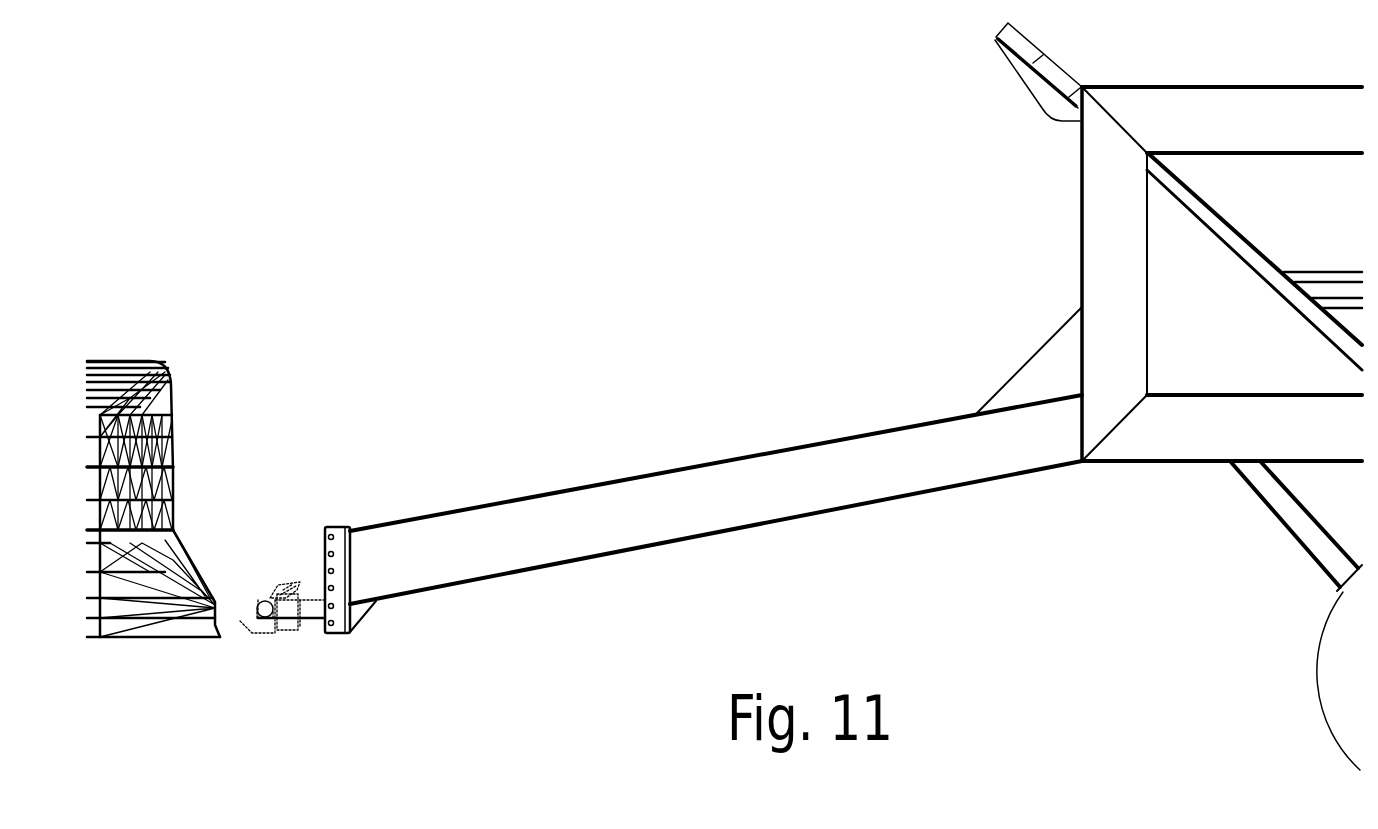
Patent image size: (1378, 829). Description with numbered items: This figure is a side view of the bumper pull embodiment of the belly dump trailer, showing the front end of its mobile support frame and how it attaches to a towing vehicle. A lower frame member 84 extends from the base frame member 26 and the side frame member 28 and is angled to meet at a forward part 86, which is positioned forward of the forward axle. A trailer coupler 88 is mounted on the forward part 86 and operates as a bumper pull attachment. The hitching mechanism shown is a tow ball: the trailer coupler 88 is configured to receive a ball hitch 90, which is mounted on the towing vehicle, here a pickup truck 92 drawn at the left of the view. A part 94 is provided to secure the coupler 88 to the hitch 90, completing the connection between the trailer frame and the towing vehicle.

The base frame member 26 is at (1200, 453).
The side frame member 28 is at (1095, 270).
The lower frame member 84 is at (716, 460).
The forward part 86 is at (338, 635).
The trailer coupler 88 is at (277, 620).
The ball hitch 90 is at (262, 603).
The pickup truck 92 is at (107, 358).
The part 94 is at (288, 584).